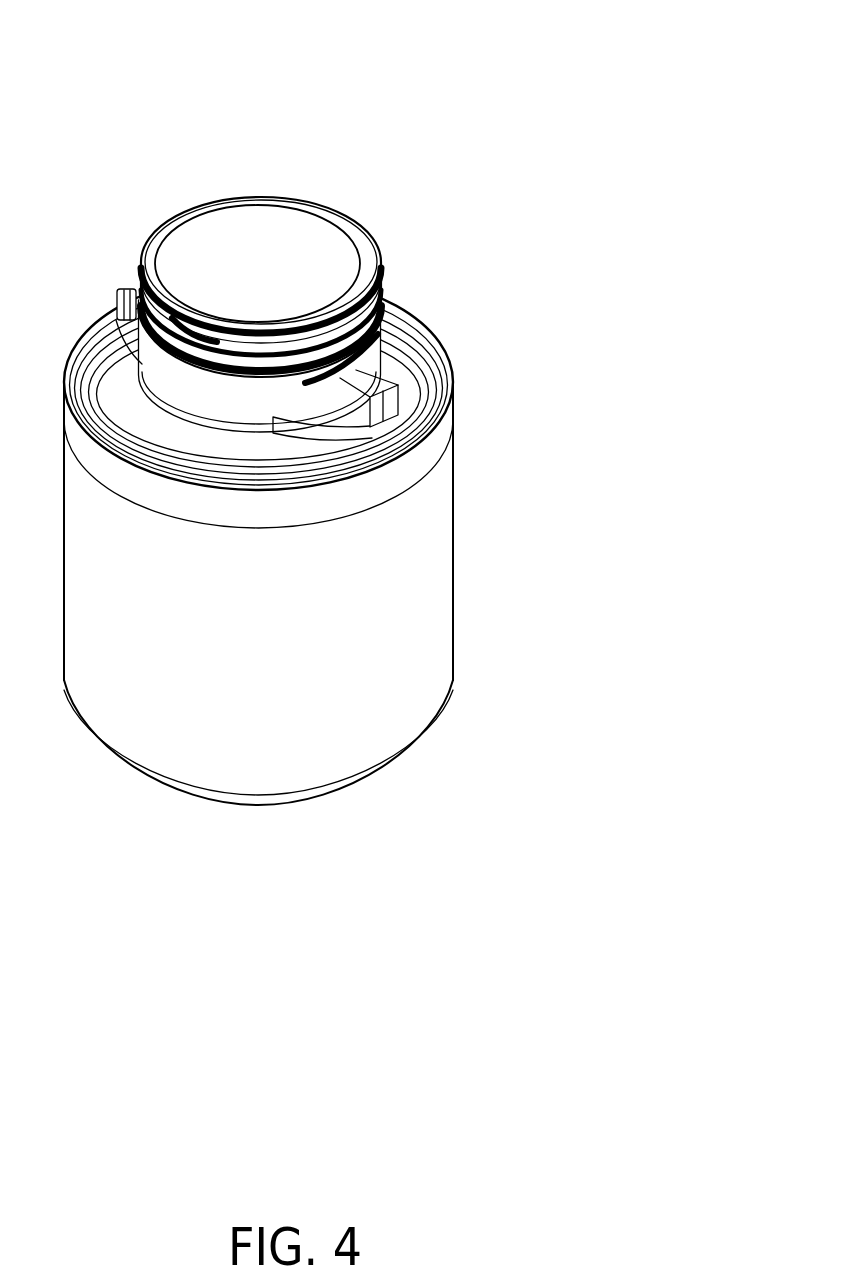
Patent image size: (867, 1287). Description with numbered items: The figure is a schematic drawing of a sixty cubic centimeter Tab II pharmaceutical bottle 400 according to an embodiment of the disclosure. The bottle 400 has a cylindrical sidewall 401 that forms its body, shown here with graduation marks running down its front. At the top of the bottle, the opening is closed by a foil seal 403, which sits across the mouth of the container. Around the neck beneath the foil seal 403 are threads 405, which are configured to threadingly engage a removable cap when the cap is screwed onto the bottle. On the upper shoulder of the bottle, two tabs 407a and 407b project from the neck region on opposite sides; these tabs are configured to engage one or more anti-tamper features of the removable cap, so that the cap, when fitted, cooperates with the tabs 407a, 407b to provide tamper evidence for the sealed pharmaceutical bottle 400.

The bottle 400 is at (309, 420).
The cylindrical sidewall 401 is at (418, 580).
The foil seal 403 is at (232, 243).
The threads 405 is at (380, 295).
The tab 407a is at (386, 411).
The tab 407b is at (118, 298).